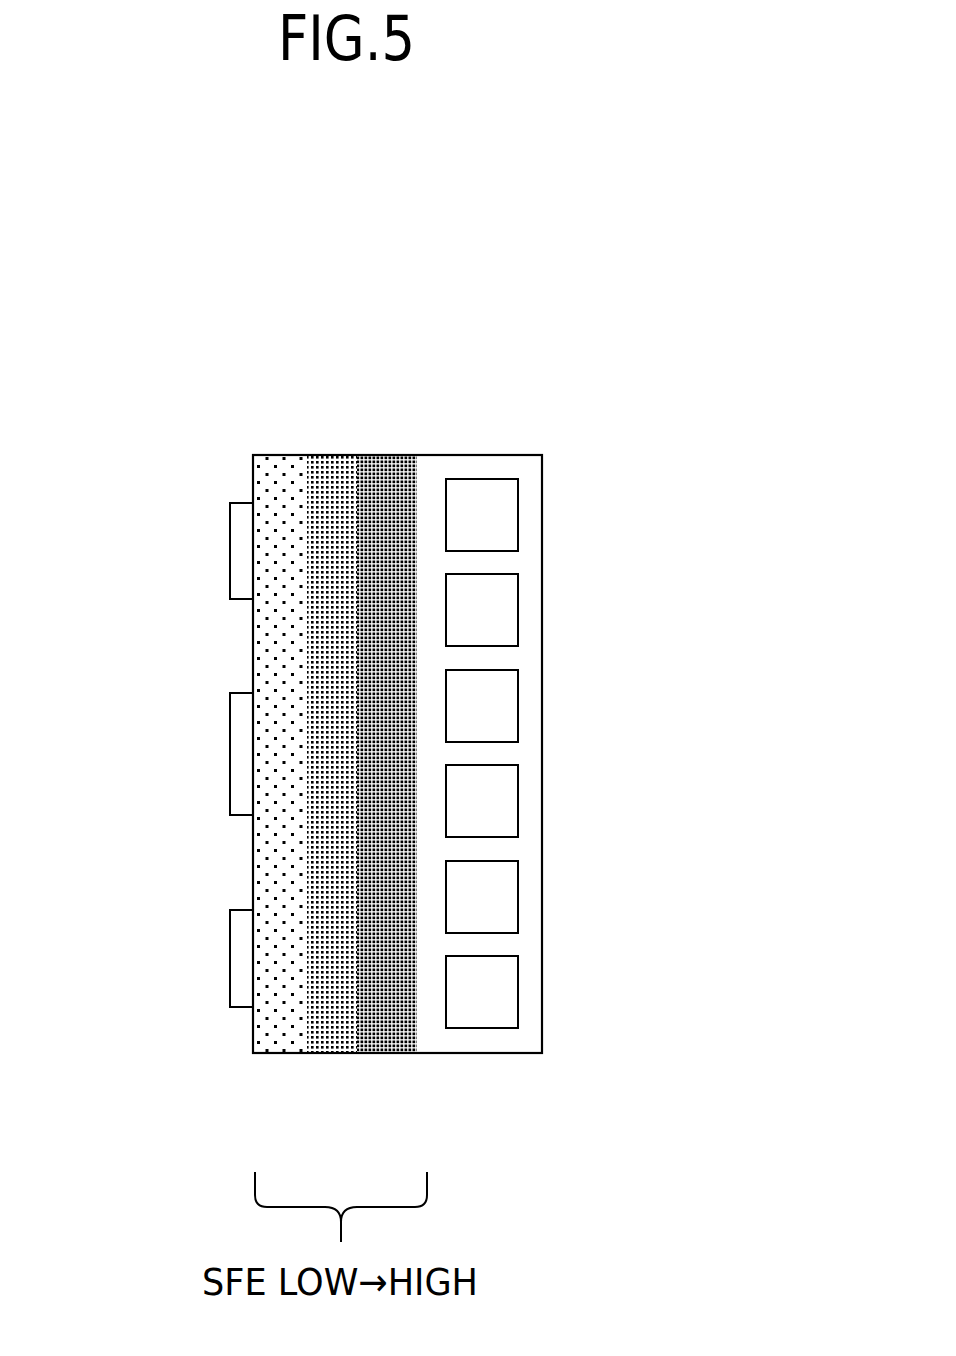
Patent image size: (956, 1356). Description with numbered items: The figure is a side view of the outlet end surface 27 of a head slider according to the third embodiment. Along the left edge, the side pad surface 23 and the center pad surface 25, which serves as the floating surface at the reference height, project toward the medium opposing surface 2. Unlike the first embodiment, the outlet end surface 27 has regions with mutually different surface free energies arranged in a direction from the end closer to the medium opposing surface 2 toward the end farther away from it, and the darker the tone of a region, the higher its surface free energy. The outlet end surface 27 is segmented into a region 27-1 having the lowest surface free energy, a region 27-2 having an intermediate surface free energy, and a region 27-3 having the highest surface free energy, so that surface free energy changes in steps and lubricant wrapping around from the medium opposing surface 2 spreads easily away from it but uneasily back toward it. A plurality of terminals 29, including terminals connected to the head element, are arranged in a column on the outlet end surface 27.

The medium opposing surface 2 is at (218, 1050).
The side pad surface 23 is at (237, 547).
The center pad surface 25 is at (237, 755).
The outlet end surface 27 is at (334, 717).
The region 27-1 is at (285, 478).
The region 27-2 is at (330, 1024).
The region 27-3 is at (395, 470).
The terminals 29 is at (497, 515).